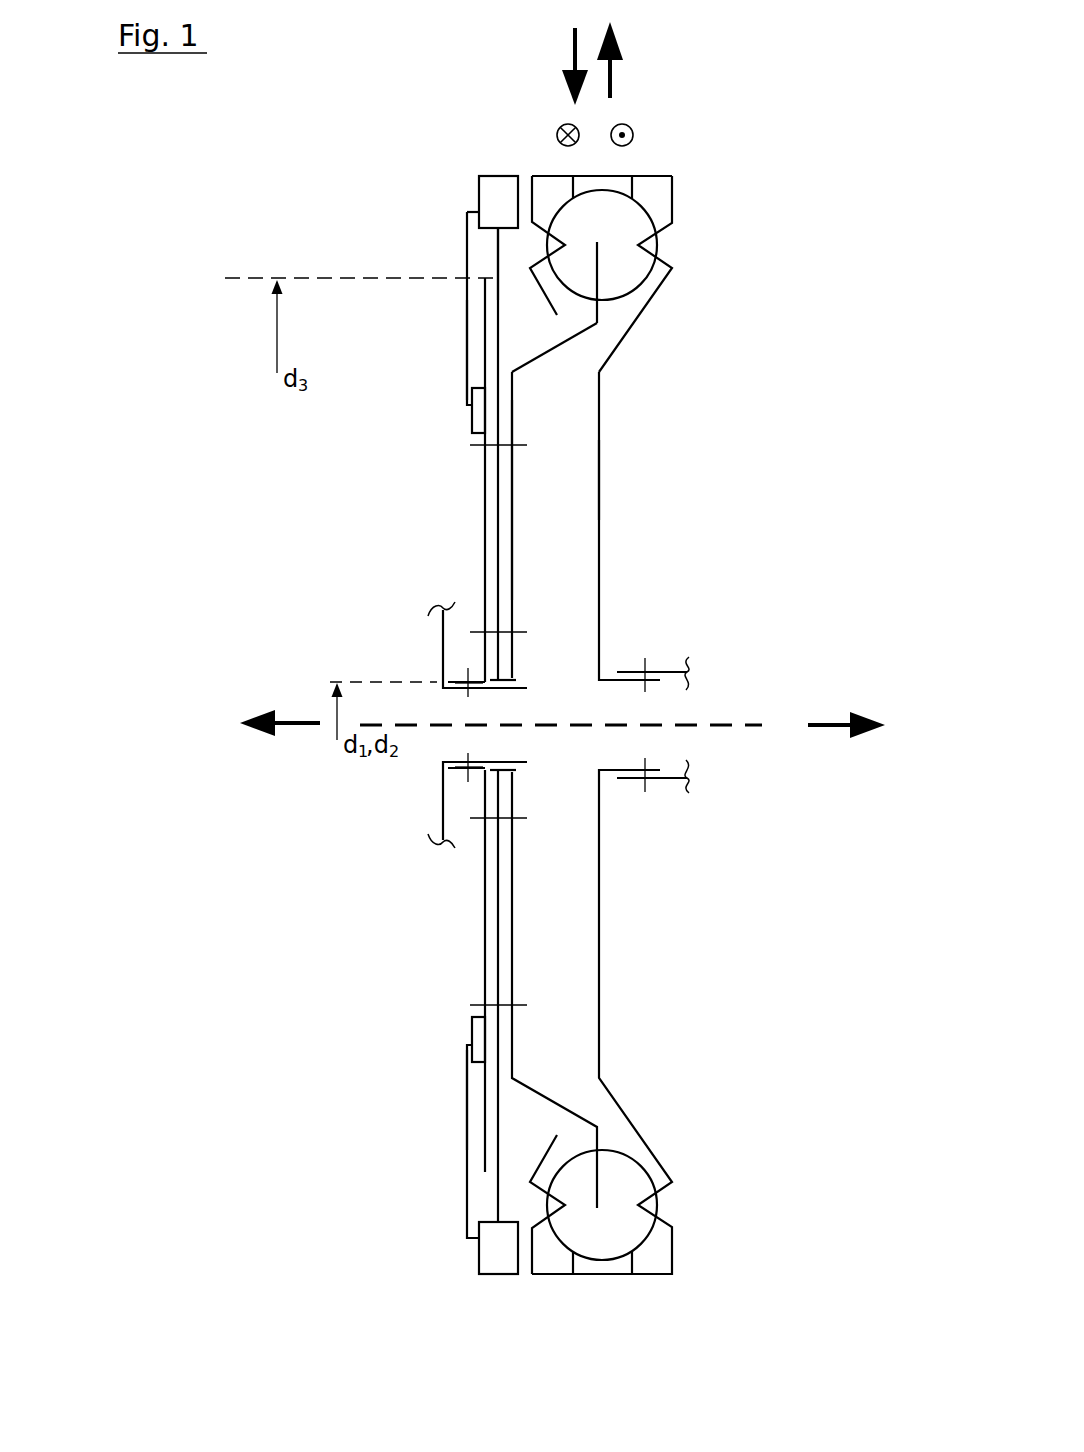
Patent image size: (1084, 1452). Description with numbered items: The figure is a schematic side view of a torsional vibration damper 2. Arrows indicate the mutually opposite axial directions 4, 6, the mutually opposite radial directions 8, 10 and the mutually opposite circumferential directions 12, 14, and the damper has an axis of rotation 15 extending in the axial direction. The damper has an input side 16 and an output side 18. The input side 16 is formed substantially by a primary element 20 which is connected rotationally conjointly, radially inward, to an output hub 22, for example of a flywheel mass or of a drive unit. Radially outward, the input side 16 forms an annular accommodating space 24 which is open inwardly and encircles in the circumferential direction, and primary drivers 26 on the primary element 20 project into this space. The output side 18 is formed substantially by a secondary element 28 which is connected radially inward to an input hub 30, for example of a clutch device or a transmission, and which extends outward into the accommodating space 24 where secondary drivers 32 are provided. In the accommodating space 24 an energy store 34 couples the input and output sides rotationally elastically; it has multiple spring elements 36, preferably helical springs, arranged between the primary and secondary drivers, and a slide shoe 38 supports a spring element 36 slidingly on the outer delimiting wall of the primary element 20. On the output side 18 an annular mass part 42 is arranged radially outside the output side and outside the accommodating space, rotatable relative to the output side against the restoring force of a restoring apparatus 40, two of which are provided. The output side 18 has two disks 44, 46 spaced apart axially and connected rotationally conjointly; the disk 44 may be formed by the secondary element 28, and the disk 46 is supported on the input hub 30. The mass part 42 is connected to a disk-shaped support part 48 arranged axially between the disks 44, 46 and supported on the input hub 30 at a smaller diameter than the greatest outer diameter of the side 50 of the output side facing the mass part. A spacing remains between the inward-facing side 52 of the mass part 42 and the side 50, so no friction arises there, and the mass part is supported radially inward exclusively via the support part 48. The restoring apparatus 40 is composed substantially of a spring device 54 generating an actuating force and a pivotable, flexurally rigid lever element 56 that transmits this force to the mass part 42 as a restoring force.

The torsional vibration damper 2 is at (748, 156).
The axial direction 4 is at (822, 728).
The axial direction 6 is at (301, 727).
The radial direction 8 is at (612, 73).
The radial direction 10 is at (573, 53).
The circumferential direction 12 is at (633, 128).
The circumferential direction 14 is at (556, 130).
The axis of rotation 15 is at (715, 723).
The input side 16 is at (622, 402).
The output side 18 is at (517, 343).
The primary element 20 is at (600, 469).
The output hub 22 is at (667, 672).
The accommodating space 24 is at (695, 205).
The primary drivers 26 is at (562, 252).
The secondary element 28 is at (515, 367).
The input hub 30 is at (443, 763).
The secondary drivers 32 is at (648, 274).
The energy store 34 is at (652, 186).
The spring elements 36 is at (598, 276).
The slide shoe 38 is at (595, 183).
The restoring apparatus 40 is at (440, 397).
The mass part 42 is at (490, 192).
The disk 44 is at (512, 518).
The disk 46 is at (485, 507).
The disk-shaped support part 48 is at (498, 472).
The side of the output side 50 is at (465, 247).
The side of the mass part 52 is at (500, 244).
The spring device 54 is at (472, 412).
The lever element 56 is at (419, 235).